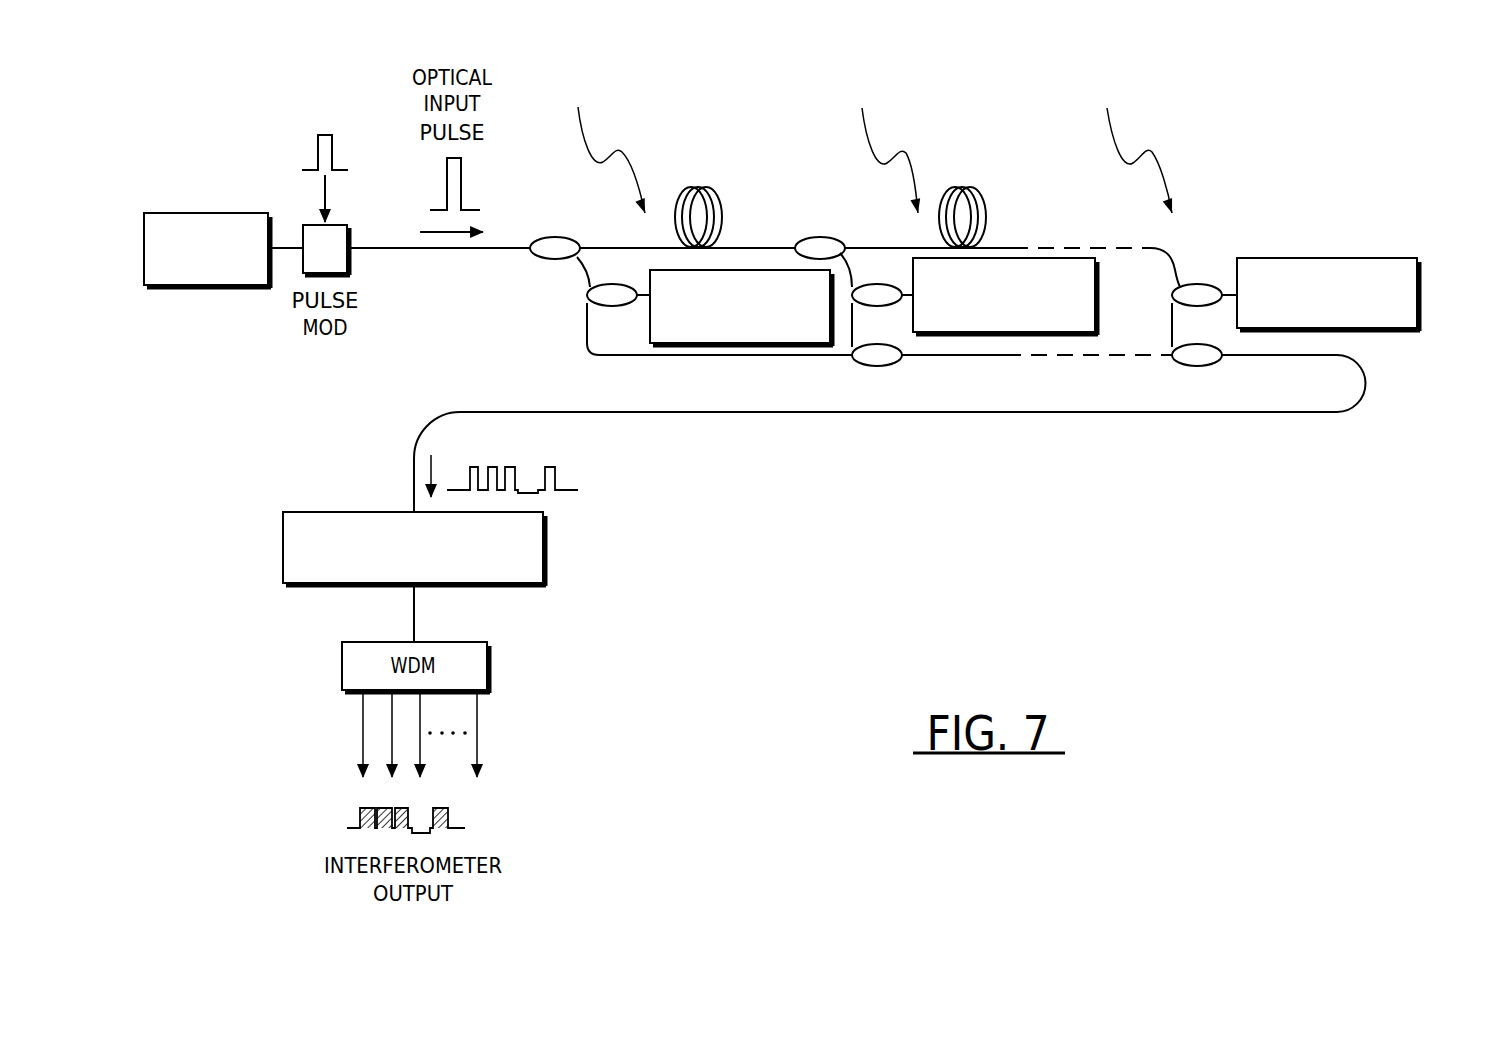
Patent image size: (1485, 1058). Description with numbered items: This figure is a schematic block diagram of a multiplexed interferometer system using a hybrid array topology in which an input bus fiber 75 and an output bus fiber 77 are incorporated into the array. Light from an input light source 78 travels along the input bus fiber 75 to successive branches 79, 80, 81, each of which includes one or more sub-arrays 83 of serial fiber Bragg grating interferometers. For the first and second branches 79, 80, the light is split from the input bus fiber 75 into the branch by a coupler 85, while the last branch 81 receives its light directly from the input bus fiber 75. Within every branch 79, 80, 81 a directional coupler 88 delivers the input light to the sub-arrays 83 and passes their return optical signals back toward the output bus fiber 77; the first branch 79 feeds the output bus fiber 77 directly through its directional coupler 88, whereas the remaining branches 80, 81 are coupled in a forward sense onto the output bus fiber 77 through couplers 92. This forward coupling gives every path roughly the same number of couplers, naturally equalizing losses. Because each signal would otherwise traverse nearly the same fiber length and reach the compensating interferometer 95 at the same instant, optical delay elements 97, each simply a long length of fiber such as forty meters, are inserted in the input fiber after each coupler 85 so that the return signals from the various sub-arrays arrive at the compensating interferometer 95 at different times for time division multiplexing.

The input bus fiber 75 is at (512, 247).
The output bus fiber 77 is at (813, 413).
The input light source 78 is at (200, 213).
The first branch 79 is at (602, 144).
The second branch 80 is at (877, 143).
The last branch 81 is at (1129, 143).
The sub-array 83 is at (698, 343).
The coupler 85 is at (552, 262).
The directional coupler 88 is at (585, 295).
The coupler 92 is at (877, 367).
The compensating interferometer 95 is at (547, 560).
The optical delay element 97 is at (722, 208).